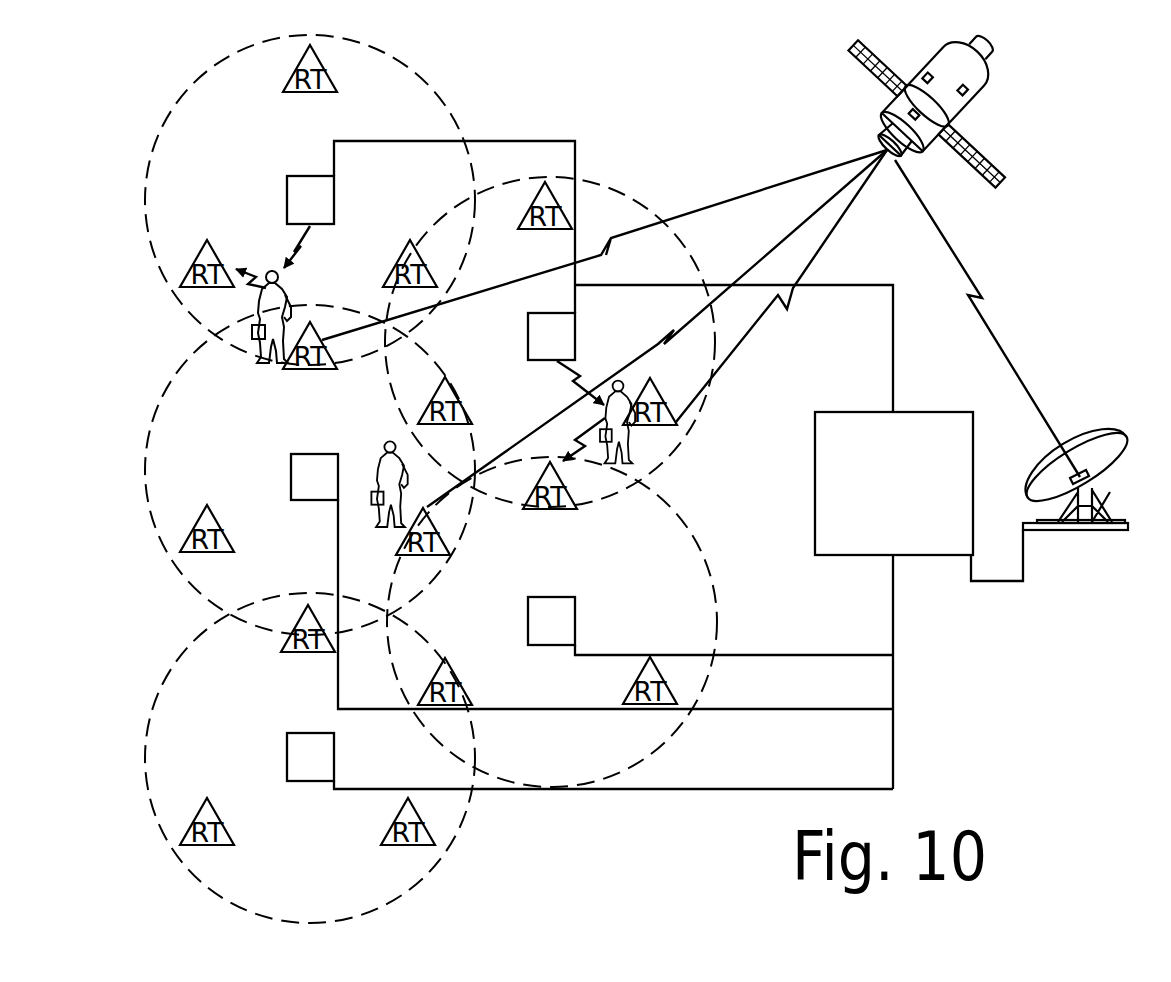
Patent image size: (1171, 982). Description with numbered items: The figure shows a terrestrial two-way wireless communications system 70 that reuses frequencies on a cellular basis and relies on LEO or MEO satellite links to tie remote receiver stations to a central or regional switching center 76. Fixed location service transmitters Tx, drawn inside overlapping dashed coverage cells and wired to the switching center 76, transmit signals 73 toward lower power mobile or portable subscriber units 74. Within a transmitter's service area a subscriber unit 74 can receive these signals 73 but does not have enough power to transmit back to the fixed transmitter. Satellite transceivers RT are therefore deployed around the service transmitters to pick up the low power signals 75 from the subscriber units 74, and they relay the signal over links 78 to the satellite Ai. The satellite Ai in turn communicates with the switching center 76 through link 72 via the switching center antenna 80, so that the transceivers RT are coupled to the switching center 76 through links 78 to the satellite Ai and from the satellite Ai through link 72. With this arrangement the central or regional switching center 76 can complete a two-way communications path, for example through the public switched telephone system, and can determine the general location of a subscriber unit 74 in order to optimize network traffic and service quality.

The terrestrial two-way wireless communications system 70 is at (693, 100).
The satellite link 72 is at (968, 264).
The signals 73 is at (290, 250).
The subscriber unit 74 is at (287, 300).
The low power signals 75 is at (253, 287).
The central or regional switching center 76 is at (925, 556).
The satellite links 78 is at (862, 198).
The switching center antenna 80 is at (1070, 532).
The satellite Ai is at (978, 104).